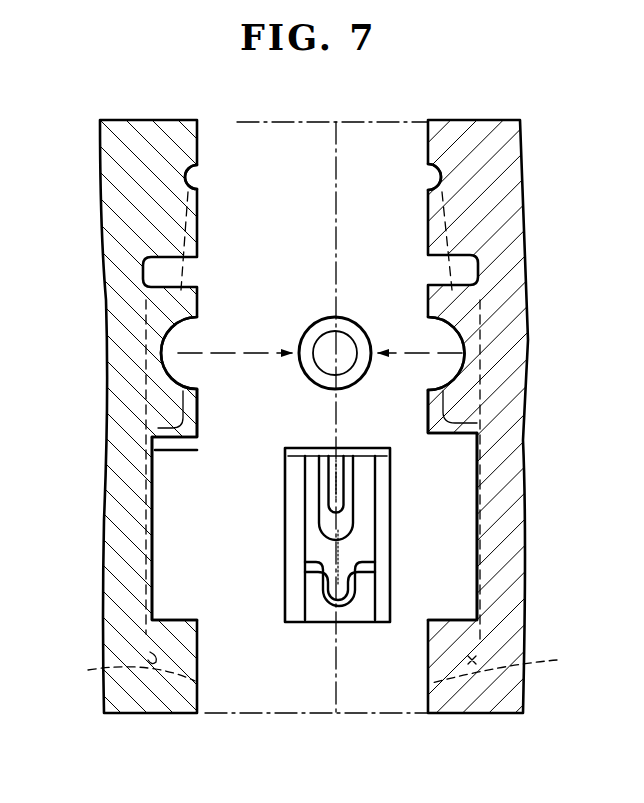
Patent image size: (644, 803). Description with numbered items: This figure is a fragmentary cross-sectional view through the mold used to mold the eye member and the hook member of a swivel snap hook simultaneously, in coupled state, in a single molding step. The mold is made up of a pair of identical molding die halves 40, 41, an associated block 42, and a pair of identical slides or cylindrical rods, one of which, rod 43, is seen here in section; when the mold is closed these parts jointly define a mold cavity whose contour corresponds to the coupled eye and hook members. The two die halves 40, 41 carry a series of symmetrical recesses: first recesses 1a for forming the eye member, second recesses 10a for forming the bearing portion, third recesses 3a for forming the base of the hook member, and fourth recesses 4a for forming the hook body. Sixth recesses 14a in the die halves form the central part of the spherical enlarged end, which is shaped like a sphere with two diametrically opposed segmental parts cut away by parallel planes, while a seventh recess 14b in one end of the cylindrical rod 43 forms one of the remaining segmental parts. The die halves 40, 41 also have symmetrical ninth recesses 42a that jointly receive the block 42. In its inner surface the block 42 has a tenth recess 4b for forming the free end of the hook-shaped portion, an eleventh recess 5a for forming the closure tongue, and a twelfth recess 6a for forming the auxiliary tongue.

The first recess 1a is at (190, 176).
The third recess 3a is at (165, 442).
The fourth recess 4a is at (315, 667).
The tenth recess 4b is at (362, 593).
The eleventh recess 5a is at (330, 555).
The twelfth recess 6a is at (332, 496).
The second recess 10a is at (309, 408).
The sixth recess 14a is at (186, 344).
The seventh recess 14b is at (338, 337).
The molding die half 40 is at (410, 713).
The molding die half 41 is at (227, 712).
The block 42 is at (310, 569).
The ninth recess 42a is at (160, 548).
The cylindrical rod 43 is at (312, 316).